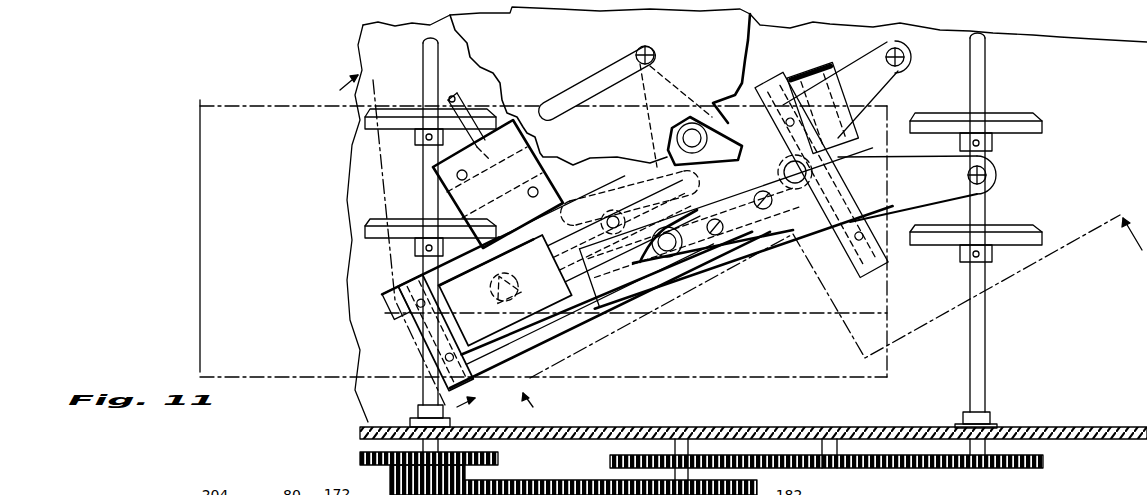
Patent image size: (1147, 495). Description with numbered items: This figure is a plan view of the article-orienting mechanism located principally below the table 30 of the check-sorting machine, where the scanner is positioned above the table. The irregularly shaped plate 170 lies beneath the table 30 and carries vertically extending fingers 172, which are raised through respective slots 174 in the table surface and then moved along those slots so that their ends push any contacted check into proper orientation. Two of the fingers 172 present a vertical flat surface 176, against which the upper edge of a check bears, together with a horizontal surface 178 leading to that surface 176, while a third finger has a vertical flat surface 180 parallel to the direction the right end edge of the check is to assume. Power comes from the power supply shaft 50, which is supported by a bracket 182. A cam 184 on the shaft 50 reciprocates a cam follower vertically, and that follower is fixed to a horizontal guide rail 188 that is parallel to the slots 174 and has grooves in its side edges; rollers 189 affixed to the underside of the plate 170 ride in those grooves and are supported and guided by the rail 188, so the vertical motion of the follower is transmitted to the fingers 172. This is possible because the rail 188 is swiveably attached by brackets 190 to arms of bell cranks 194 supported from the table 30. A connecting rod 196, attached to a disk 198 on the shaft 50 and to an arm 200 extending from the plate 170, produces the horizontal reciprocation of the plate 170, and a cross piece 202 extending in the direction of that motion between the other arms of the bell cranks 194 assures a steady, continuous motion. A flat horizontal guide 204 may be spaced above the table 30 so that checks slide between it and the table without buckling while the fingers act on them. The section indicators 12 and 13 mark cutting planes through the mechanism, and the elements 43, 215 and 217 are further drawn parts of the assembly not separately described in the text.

The section line 12- 12 is at (419, 233).
The section line 13- 13 is at (823, 300).
The table 30 is at (748, 45).
The gear 43 is at (574, 481).
The power supply shaft 50 is at (457, 98).
The irregularly shaped plate 170 is at (821, 174).
The vertically extending fingers 172 is at (645, 46).
The slots 174 is at (605, 74).
The vertical flat surface 176 is at (655, 57).
The horizontal surface 178 is at (647, 64).
The vertical flat surface 180 is at (968, 175).
The bracket 182 is at (548, 166).
The cam 184 is at (583, 273).
The horizontal guide rail 188 is at (578, 191).
The rollers 189 is at (680, 118).
The brackets 190 is at (524, 363).
The bell cranks 194 is at (398, 292).
The connecting rod 196 is at (634, 268).
The disk 198 is at (537, 305).
The arm 200 is at (756, 208).
The cross piece 202 is at (565, 326).
The flat horizontal guide 204 is at (703, 244).
The crossbar 215 is at (1013, 113).
The crossbar 217 is at (398, 109).